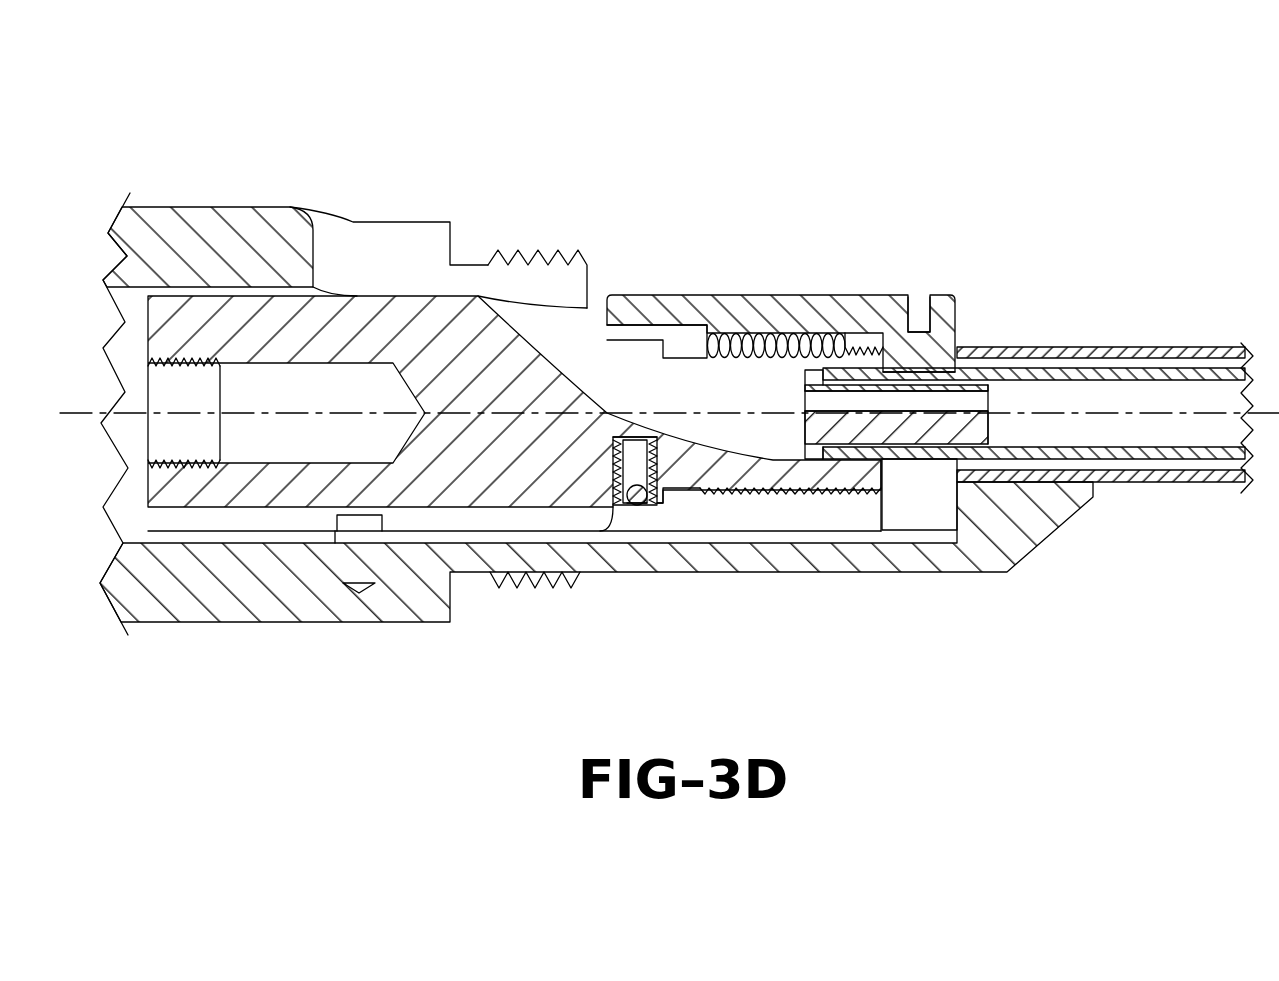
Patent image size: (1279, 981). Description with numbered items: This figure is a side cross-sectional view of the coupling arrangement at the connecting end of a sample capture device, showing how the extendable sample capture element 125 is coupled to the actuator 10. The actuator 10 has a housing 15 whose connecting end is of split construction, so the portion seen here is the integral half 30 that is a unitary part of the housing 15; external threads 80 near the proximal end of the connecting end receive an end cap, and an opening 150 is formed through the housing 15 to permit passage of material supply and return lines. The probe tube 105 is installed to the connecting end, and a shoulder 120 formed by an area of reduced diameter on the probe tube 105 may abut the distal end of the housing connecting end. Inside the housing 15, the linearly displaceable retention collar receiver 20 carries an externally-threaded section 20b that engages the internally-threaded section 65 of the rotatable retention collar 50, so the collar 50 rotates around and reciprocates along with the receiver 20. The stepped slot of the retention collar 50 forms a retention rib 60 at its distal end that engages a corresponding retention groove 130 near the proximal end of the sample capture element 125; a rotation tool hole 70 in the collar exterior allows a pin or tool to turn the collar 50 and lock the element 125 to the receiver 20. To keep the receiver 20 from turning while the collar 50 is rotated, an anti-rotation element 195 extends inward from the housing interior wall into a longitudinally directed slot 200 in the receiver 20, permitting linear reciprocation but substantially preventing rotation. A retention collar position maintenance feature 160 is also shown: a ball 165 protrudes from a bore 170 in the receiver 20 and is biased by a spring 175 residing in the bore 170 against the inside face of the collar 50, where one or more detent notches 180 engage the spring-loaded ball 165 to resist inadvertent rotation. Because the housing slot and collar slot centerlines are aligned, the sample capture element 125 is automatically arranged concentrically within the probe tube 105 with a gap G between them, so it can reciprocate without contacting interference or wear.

The actuator 10 is at (205, 195).
The actuator housing 15 is at (203, 585).
The retention collar receiver 20 is at (680, 375).
The externally-threaded section 20b is at (752, 380).
The integral half 30 is at (855, 555).
The retention collar 50 is at (835, 292).
The retention rib 60 is at (915, 502).
The internally-threaded section 65 is at (773, 340).
The rotation tool hole 70 is at (930, 312).
The external threads 80 is at (535, 249).
The probe tube 105 is at (1157, 355).
The shoulder 120 is at (953, 366).
The sample capture element 125 is at (1163, 378).
The retention groove 130 is at (955, 328).
The opening 150 is at (340, 252).
The retention collar position maintenance feature 160 is at (645, 513).
The ball 165 is at (632, 502).
The bore 170 is at (637, 453).
The spring 175 is at (614, 444).
The detent notch 180 is at (632, 506).
The anti-rotation element 195 is at (357, 535).
The longitudinally directed slot 200 is at (298, 515).
The gap G is at (1230, 367).